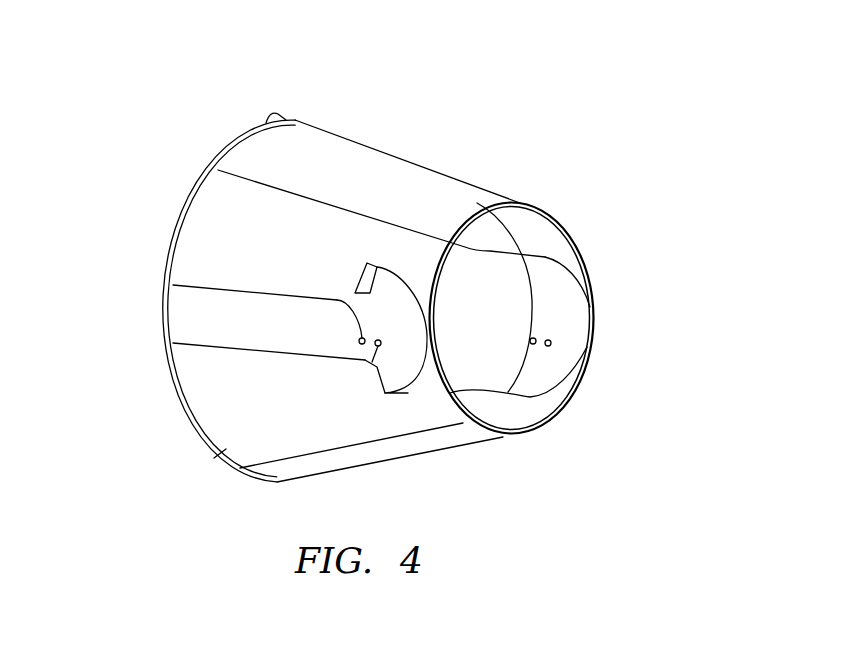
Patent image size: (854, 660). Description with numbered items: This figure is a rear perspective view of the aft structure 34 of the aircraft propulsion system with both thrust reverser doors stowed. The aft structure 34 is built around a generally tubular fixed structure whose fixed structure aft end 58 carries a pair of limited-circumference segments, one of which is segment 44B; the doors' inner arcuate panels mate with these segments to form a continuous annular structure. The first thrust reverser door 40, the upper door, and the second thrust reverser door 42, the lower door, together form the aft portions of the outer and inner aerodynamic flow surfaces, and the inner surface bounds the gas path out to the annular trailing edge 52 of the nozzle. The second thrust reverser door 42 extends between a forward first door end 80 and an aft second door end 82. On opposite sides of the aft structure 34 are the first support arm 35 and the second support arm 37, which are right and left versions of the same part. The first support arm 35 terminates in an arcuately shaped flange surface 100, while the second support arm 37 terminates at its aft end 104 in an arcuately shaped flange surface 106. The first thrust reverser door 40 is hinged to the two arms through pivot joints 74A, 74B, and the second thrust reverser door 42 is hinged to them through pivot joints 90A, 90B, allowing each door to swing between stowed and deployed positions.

The aft structure 34 is at (166, 149).
The first thrust reverser door 40 is at (383, 160).
The second door end 82 is at (547, 425).
The second support arm 37 is at (600, 281).
The first support arm 35 is at (193, 328).
The first door end 80 is at (183, 400).
The second thrust reverser door 42 is at (220, 460).
The pivot joint 74A is at (337, 300).
The pivot joint 90A is at (370, 365).
The arcuately shaped flange surface 100 is at (400, 377).
The segment 44B is at (493, 282).
The fixed structure aft end 58 is at (533, 338).
The pivot joint 74B is at (575, 245).
The pivot joint 90B is at (551, 341).
The aft end 104 is at (580, 333).
The arcuately shaped flange surface 106 is at (568, 347).
The annular trailing edge 52 is at (587, 357).